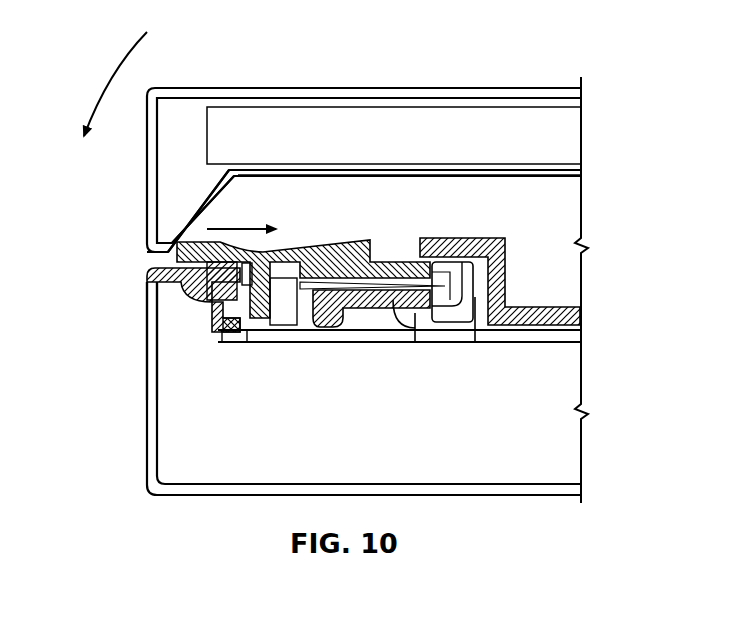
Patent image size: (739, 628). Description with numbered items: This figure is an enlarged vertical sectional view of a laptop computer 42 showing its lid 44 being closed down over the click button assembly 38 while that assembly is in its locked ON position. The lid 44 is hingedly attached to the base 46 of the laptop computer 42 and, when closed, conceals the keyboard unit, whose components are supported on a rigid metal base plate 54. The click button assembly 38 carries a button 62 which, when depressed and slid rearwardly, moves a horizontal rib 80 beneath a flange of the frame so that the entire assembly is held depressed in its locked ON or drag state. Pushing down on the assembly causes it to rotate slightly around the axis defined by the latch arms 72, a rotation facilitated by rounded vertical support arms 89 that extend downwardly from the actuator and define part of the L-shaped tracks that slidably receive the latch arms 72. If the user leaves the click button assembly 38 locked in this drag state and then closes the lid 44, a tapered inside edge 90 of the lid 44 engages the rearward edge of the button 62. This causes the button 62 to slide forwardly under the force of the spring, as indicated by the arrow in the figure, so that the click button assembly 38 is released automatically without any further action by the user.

The click button assembly 38 is at (191, 344).
The laptop computer 42 is at (126, 229).
The lid 44 is at (408, 88).
The base 46 is at (478, 494).
The rigid metal base plate 54 is at (330, 343).
The button 62 is at (326, 243).
The latch arm 72 is at (475, 343).
The horizontal rib 80 is at (237, 333).
The rounded vertical support arm 89 is at (415, 343).
The tapered inside edge 90 is at (197, 205).